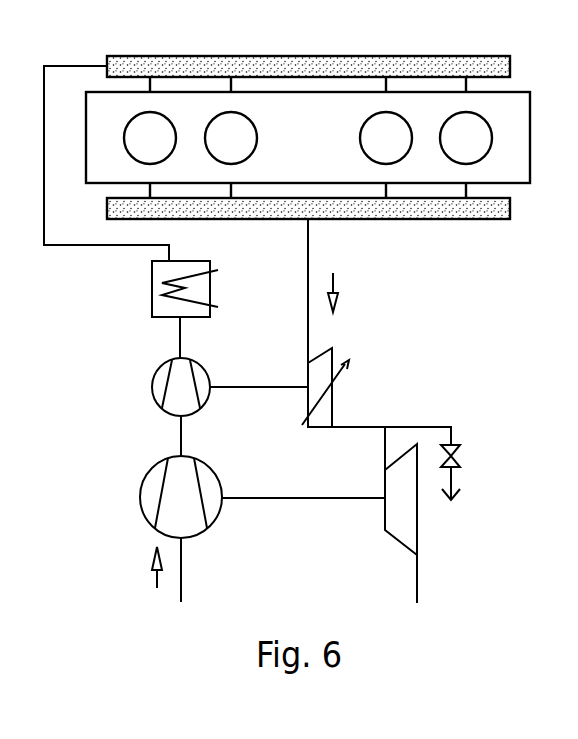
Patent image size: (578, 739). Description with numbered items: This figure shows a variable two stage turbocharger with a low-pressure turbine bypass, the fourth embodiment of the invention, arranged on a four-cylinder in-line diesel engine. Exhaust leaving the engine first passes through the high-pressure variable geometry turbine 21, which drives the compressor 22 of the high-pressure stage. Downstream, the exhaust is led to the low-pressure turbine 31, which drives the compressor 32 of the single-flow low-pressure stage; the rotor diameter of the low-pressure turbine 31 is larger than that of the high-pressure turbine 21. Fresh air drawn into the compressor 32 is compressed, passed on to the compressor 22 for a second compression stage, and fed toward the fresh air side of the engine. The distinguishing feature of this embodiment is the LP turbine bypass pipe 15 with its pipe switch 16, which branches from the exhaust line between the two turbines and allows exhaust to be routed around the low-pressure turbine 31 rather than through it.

The LP turbine bypass pipe 15 is at (435, 427).
The pipe switch 16 is at (465, 450).
The high-pressure variable geometry turbine 21 is at (318, 374).
The compressor 22 is at (157, 390).
The low-pressure turbine 31 is at (398, 530).
The compressor 32 is at (150, 487).